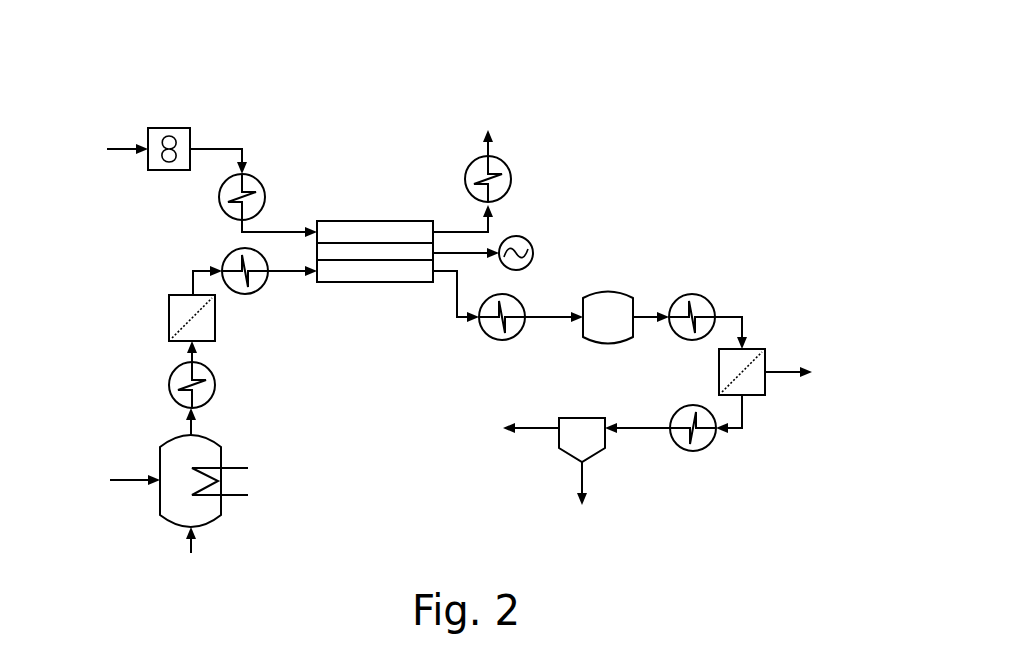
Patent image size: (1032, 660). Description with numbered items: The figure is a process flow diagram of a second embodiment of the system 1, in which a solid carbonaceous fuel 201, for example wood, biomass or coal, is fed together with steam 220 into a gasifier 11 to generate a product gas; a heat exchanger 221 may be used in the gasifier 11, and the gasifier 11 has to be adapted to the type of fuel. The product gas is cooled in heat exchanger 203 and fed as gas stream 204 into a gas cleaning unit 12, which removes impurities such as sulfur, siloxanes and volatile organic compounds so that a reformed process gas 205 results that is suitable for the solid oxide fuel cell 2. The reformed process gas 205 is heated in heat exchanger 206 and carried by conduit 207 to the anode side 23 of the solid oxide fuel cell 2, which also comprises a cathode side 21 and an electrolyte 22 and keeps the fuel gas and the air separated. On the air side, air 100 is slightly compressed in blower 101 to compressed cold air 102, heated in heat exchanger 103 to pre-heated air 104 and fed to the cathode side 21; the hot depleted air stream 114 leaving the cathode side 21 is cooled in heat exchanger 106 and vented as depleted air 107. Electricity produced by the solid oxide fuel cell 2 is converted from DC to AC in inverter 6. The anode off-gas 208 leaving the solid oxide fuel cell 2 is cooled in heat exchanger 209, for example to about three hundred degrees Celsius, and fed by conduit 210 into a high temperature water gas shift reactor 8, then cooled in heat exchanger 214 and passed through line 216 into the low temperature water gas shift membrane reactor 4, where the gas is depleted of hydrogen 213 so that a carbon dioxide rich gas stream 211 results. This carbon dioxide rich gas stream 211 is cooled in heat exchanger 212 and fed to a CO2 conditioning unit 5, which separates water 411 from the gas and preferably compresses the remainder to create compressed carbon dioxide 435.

The system 1 is at (697, 82).
The solid oxide fuel cell 2 is at (375, 210).
The cathode side 21 is at (385, 220).
The electrolyte 22 is at (330, 243).
The anode side 23 is at (385, 281).
The low temperature water gas shift membrane reactor 4 is at (752, 353).
The CO2 conditioning unit 5 is at (590, 418).
The inverter 6 is at (531, 242).
The high temperature water gas shift reactor 8 is at (605, 292).
The gasifier 11 is at (231, 464).
The gas cleaning unit 12 is at (175, 305).
The air 100 is at (130, 147).
The blower 101 is at (167, 127).
The compressed cold air 102 is at (222, 148).
The heat exchanger 103 is at (261, 184).
The pre-heated air 104 is at (297, 231).
The heat exchanger 106 is at (512, 176).
The depleted air 107 is at (498, 132).
The hot depleted air stream 114 is at (461, 231).
The solid carbonaceous fuel 201 is at (193, 545).
The heat exchanger 203 is at (205, 372).
The gas stream 204 is at (185, 350).
The reformed process gas 205 is at (193, 265).
The heat exchanger 206 is at (255, 283).
The conduit 207 is at (298, 273).
The anode off-gas 208 is at (457, 313).
The heat exchanger 209 is at (492, 328).
The conduit 210 is at (538, 320).
The carbon dioxide rich gas stream 211 is at (742, 418).
The heat exchanger 212 is at (705, 445).
The hydrogen 213 is at (782, 373).
The heat exchanger 214 is at (700, 298).
The stream 216 is at (648, 320).
The steam 220 is at (130, 482).
The heat exchanger 221 is at (242, 468).
The water 411 is at (583, 478).
The compressed carbon dioxide 435 is at (540, 428).